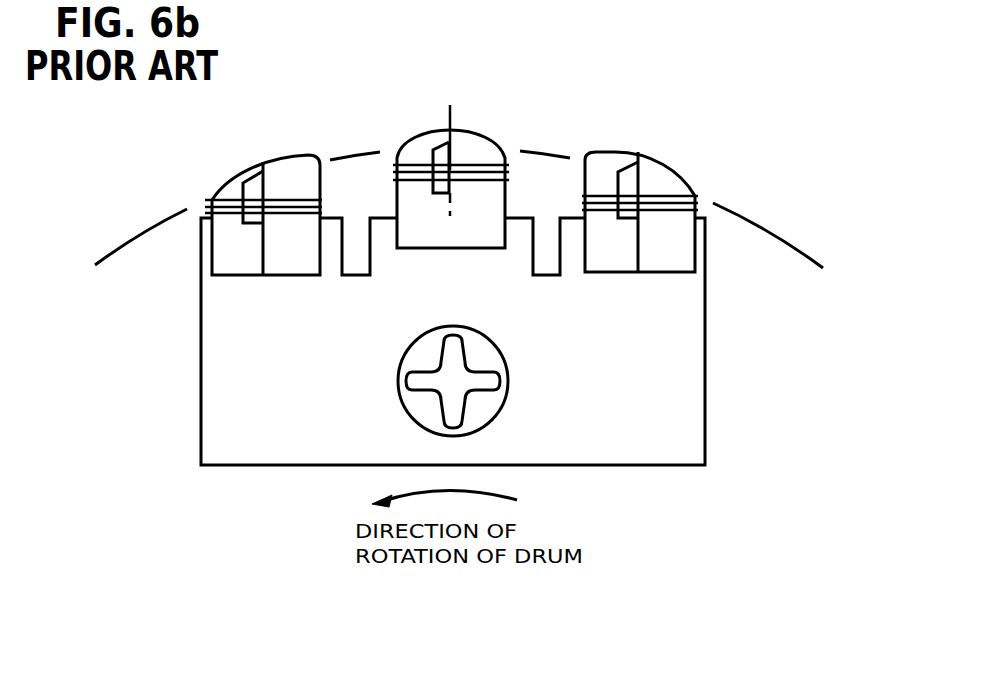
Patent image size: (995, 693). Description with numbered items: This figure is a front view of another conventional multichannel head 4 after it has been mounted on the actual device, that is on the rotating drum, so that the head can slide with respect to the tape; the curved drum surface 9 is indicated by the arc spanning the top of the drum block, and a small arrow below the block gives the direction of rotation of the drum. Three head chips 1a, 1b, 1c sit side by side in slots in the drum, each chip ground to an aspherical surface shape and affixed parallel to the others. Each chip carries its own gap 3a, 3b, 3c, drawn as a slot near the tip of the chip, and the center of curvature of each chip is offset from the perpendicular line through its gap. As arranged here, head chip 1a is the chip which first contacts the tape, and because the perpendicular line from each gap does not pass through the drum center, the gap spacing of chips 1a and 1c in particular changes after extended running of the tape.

The multi-channel head 4 is at (710, 514).
The drum surface / tape path 9 is at (135, 241).
The head chip 1a is at (245, 272).
The head chip 1b is at (432, 238).
The head chip 1c is at (620, 262).
The gap 3a is at (262, 166).
The gap 3b is at (448, 130).
The gap 3c is at (638, 158).